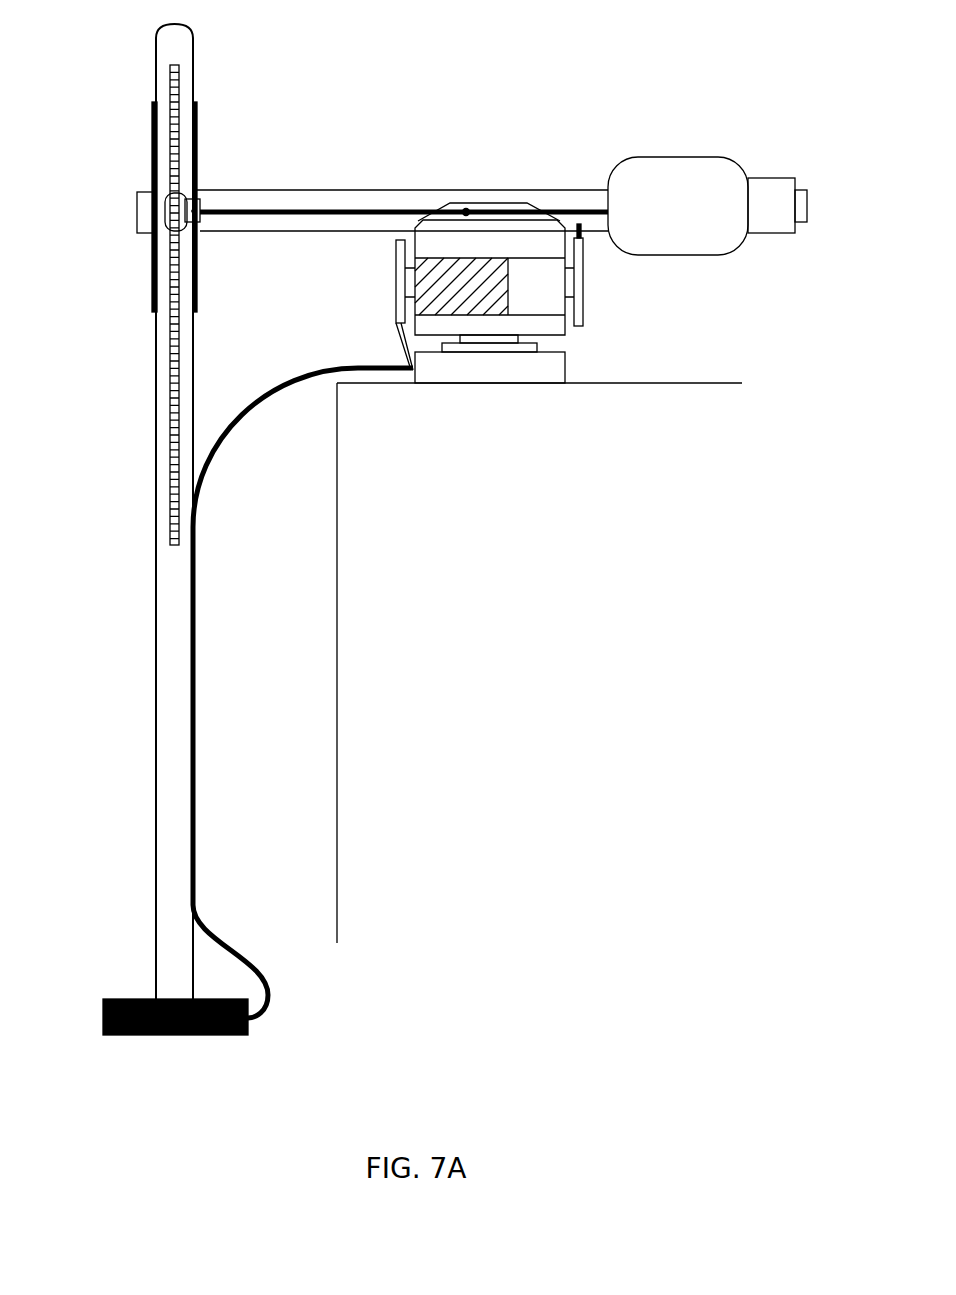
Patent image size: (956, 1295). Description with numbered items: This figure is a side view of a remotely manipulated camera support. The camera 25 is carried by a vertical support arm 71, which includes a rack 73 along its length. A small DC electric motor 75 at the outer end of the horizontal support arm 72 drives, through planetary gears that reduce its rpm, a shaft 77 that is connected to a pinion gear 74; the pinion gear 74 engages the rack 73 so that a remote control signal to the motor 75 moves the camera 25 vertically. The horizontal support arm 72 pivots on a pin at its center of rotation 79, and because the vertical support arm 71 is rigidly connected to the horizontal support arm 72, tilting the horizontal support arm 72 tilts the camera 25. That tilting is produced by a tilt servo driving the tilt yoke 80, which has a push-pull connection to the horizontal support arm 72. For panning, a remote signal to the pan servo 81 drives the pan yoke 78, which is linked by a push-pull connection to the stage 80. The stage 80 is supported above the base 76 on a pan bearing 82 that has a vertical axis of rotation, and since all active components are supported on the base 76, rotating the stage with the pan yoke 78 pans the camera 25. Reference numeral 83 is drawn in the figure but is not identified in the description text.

The camera 25 is at (103, 1018).
The vertical support arm 71 is at (156, 633).
The horizontal support arm 72 is at (352, 190).
The rack 73 is at (172, 367).
The pinion gear 74 is at (165, 202).
The small DC electric motor 75 is at (769, 178).
The base 76 is at (565, 370).
The shaft 77 is at (576, 212).
The pan yoke 78 is at (583, 243).
The center of rotation 79 is at (466, 208).
The tilt yoke 80 is at (396, 306).
The pan servo 81 is at (432, 315).
The pan bearing 82 is at (537, 348).
The pedestal 83 is at (565, 329).